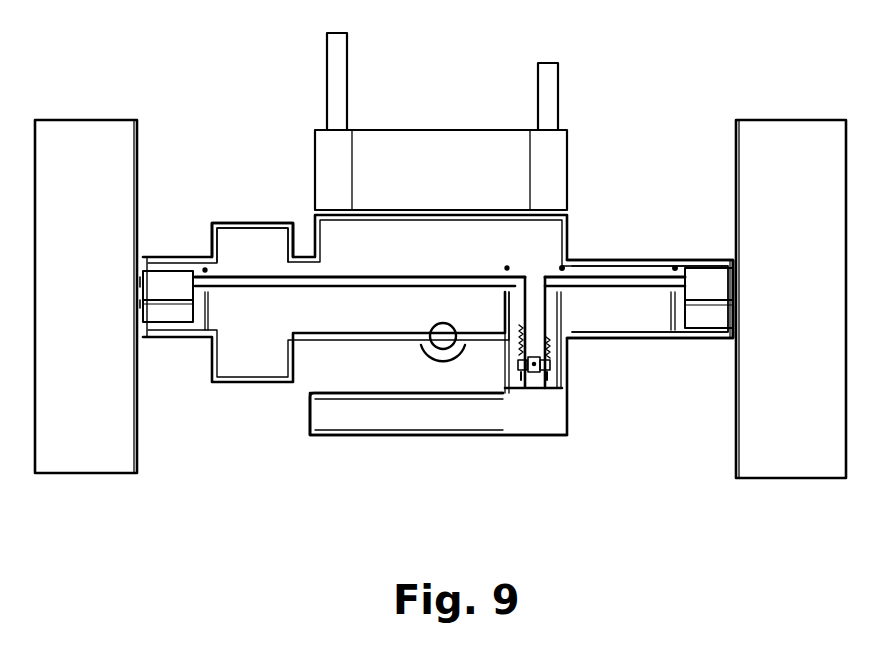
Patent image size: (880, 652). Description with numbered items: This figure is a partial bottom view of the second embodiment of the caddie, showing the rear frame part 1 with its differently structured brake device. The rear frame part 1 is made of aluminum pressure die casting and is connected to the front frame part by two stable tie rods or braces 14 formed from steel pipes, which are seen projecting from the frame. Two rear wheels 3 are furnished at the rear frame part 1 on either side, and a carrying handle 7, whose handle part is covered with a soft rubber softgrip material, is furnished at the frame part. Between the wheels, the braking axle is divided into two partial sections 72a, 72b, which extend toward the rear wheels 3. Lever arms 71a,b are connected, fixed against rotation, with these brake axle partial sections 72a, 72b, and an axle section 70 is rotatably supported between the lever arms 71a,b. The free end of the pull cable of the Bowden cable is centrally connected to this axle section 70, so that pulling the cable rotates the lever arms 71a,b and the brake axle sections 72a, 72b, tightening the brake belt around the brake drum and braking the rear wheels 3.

The rear frame part 1 is at (243, 405).
The rear wheels 3 is at (63, 140).
The carrying handle 7 is at (428, 420).
The tie rods or braces 14 is at (550, 102).
The axle section 70 is at (537, 376).
The lever arms 71a,b is at (522, 327).
The brake axle partial section 72a is at (252, 277).
The brake axle partial section 72b is at (615, 278).